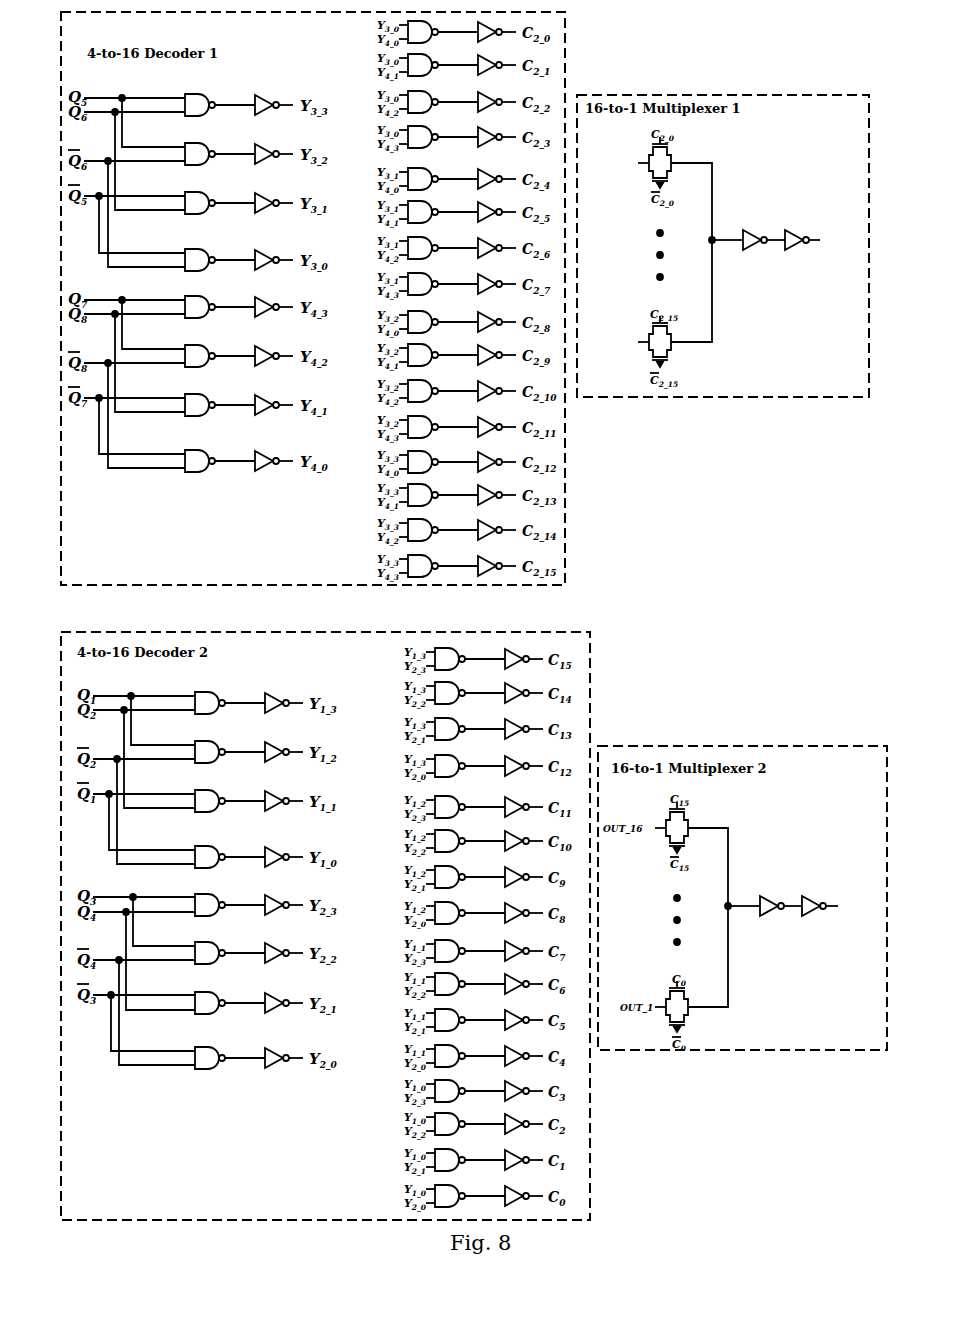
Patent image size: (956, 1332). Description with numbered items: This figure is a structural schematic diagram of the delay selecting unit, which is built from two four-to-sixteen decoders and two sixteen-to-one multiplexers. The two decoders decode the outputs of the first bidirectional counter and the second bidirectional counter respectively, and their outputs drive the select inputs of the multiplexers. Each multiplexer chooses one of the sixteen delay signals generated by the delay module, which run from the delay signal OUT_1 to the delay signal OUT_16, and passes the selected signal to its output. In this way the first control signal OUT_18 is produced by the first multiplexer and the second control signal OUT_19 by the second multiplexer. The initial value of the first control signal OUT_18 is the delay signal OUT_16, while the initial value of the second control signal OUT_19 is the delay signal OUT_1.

The multiplexer input OUT_ 16 is at (629, 162).
The multiplexer input OUT_ 1 is at (631, 341).
The multiplexer 1 output OUT_ 18 is at (788, 240).
The multiplexer 2 output OUT_ 19 is at (805, 906).